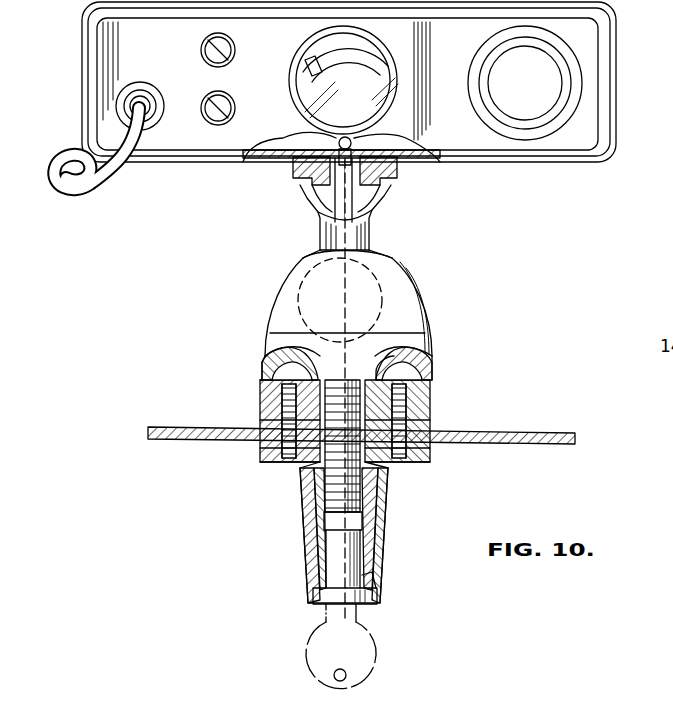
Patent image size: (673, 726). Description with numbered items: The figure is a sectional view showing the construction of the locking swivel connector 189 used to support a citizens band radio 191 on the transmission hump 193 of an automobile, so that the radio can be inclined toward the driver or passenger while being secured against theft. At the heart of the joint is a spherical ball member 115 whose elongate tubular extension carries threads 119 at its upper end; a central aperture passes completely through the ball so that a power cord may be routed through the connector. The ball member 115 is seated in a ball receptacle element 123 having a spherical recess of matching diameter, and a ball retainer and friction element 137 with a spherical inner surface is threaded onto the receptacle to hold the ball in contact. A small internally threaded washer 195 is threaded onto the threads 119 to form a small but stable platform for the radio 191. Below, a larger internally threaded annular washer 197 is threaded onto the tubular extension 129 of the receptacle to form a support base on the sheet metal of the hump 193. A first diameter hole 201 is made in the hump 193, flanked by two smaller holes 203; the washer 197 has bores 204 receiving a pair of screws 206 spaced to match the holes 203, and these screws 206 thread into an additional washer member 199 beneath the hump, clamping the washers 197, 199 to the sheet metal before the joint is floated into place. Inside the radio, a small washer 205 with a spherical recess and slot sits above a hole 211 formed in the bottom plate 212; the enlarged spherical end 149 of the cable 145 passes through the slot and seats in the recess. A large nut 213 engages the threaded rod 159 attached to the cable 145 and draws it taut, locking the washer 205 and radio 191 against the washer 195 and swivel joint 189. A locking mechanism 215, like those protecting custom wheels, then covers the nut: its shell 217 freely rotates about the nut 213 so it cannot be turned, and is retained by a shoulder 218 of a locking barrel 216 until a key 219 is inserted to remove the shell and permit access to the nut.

The citizens band radio 191 is at (615, 86).
The enlarged spherical end 149 is at (302, 140).
The small washer 205 is at (272, 164).
The bottom plate 212 is at (292, 182).
The internally threaded washer 195 is at (400, 172).
The hole 211 is at (382, 216).
The threads 119 is at (322, 188).
The spherical ball member 115 is at (386, 262).
The ball retainer and friction element 137 is at (412, 310).
The cable 145 is at (340, 290).
The swivel connector 189 is at (430, 333).
The ball receptacle element 123 is at (275, 346).
The screws 206 is at (272, 368).
The tubular extension 129 is at (420, 368).
The larger internally threaded annular washer 197 is at (430, 408).
The bores 204 is at (288, 408).
The smaller holes 203 is at (428, 430).
The transmission hump 193 is at (526, 432).
The additional washer member 199 is at (425, 452).
The threaded rod 159 is at (332, 475).
The first diameter hole 201 is at (392, 464).
The large nut 213 is at (318, 496).
The locking barrel 216 is at (335, 556).
The shell 217 is at (376, 578).
The shoulder 218 is at (372, 596).
The locking mechanism 215 is at (296, 595).
The key 219 is at (377, 655).